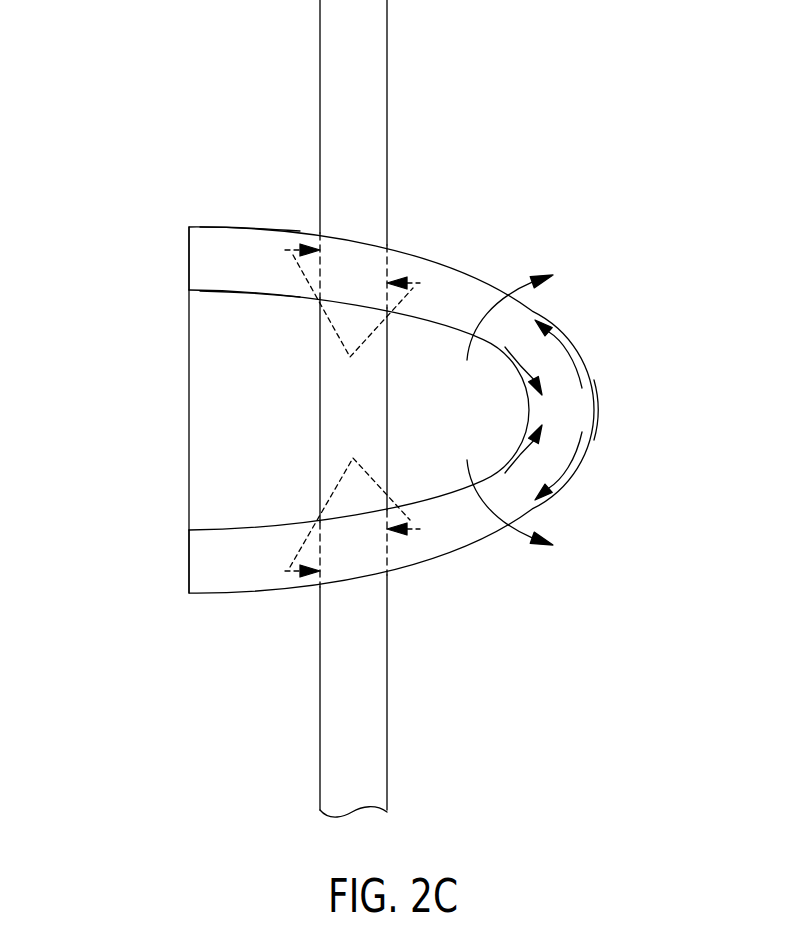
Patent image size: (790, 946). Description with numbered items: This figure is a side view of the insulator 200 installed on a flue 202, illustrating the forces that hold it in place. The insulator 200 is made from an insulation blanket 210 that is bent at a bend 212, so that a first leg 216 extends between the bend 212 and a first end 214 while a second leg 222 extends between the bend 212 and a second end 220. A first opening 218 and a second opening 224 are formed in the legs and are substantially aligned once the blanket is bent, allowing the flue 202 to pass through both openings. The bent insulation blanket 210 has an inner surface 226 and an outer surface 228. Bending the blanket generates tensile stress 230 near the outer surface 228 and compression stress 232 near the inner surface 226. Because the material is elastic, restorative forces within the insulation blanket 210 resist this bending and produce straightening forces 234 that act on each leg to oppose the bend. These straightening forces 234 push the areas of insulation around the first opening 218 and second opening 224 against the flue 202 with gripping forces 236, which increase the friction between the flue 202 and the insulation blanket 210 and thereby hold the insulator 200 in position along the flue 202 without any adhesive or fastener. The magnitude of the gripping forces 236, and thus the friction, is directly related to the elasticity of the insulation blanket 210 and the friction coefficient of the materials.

The insulator 200 is at (536, 93).
The flue 202 is at (330, 74).
The insulation blanket 210 is at (472, 285).
The bend 212 is at (598, 412).
The first end 214 is at (203, 253).
The first leg 216 is at (150, 224).
The first opening 218 is at (388, 272).
The second end 220 is at (202, 552).
The second leg 222 is at (142, 583).
The second opening 224 is at (388, 560).
The inner surface 226 is at (225, 291).
The outer surface 228 is at (225, 226).
The tensile stress 230 is at (568, 357).
The compression stress 232 is at (523, 455).
The straightening forces 234 is at (490, 313).
The gripping forces 236 is at (349, 410).